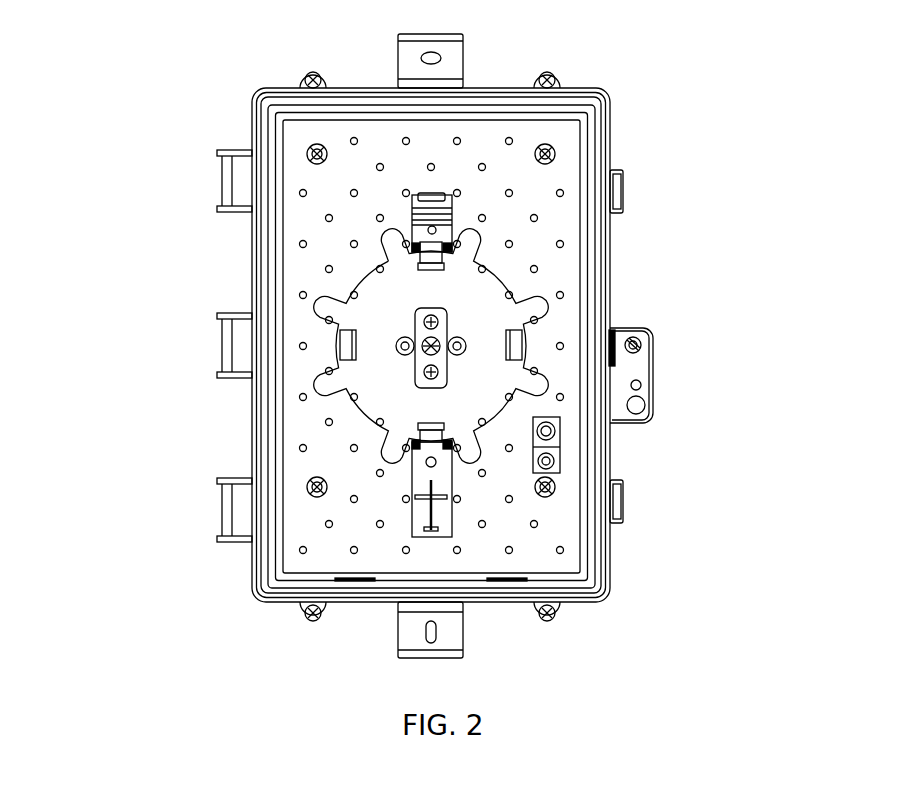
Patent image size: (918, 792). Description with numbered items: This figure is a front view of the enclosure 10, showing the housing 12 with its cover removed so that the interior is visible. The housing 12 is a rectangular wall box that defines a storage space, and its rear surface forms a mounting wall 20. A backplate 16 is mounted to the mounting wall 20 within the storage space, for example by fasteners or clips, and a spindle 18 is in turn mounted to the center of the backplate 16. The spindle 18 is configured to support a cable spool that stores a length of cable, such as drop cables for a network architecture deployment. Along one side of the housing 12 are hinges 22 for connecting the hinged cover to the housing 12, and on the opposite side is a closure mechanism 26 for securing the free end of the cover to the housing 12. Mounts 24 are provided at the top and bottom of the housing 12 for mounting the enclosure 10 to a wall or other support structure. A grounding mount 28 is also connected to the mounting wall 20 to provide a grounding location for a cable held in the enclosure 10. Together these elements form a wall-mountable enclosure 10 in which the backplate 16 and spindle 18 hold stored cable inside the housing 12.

The enclosure 10 is at (94, 115).
The housing 12 is at (288, 100).
The backplate 16 is at (475, 383).
The spindle 18 is at (438, 323).
The mounting wall 20 is at (555, 512).
The hinges 22 is at (233, 185).
The mounts 24 is at (440, 55).
The closure mechanism 26 is at (640, 367).
The grounding mount 28 is at (545, 437).